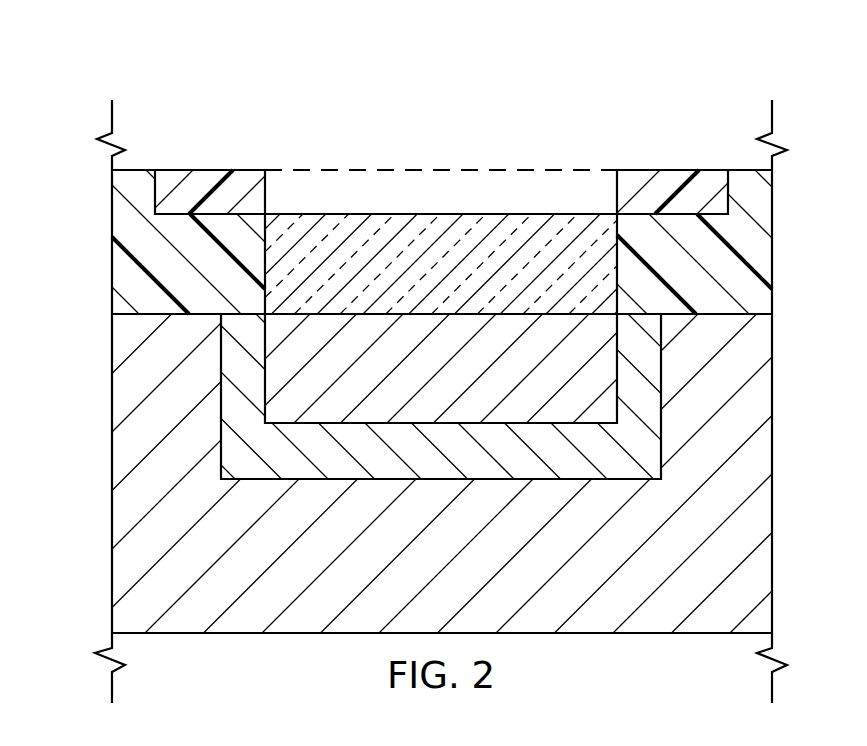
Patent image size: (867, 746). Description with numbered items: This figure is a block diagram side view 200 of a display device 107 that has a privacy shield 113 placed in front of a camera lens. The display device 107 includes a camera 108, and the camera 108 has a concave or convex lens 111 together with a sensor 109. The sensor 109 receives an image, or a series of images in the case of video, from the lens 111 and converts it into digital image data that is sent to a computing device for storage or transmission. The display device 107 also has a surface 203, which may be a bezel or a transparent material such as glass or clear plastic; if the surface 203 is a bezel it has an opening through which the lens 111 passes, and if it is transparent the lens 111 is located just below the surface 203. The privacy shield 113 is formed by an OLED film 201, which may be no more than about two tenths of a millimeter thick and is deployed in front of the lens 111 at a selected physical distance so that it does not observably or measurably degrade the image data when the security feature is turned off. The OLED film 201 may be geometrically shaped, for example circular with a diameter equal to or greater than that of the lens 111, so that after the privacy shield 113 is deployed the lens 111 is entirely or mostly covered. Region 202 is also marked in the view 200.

The side view 200 is at (324, 61).
The display device 107 is at (462, 571).
The camera 108 is at (461, 466).
The sensor 109 is at (461, 385).
The lens 111 is at (460, 280).
The privacy shield 113 is at (291, 124).
The OLED film 201 is at (672, 180).
The opening 202 is at (398, 175).
The surface 203 is at (118, 264).